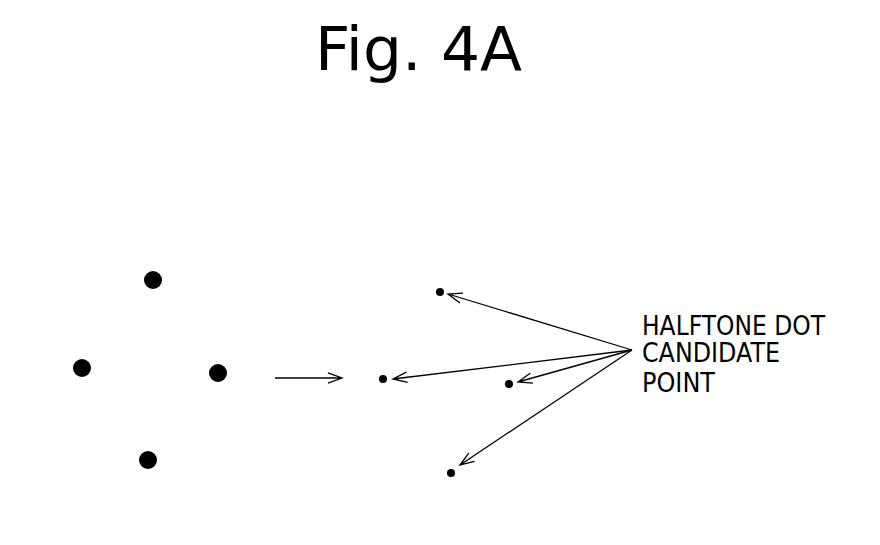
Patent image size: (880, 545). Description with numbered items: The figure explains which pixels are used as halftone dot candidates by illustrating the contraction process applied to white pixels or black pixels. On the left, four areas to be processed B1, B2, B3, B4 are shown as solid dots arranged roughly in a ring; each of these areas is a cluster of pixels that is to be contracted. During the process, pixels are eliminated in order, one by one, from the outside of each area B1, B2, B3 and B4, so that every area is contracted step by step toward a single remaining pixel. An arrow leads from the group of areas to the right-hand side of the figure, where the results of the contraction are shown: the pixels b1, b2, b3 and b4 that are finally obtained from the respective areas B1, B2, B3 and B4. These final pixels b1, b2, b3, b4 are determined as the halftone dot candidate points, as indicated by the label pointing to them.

The area to be processed B1 is at (157, 271).
The area to be processed B2 is at (218, 364).
The area to be processed B3 is at (157, 457).
The area to be processed B4 is at (78, 360).
The halftone dot candidate point b1 is at (420, 291).
The halftone dot candidate point b2 is at (492, 401).
The halftone dot candidate point b3 is at (438, 491).
The halftone dot candidate point b4 is at (374, 398).